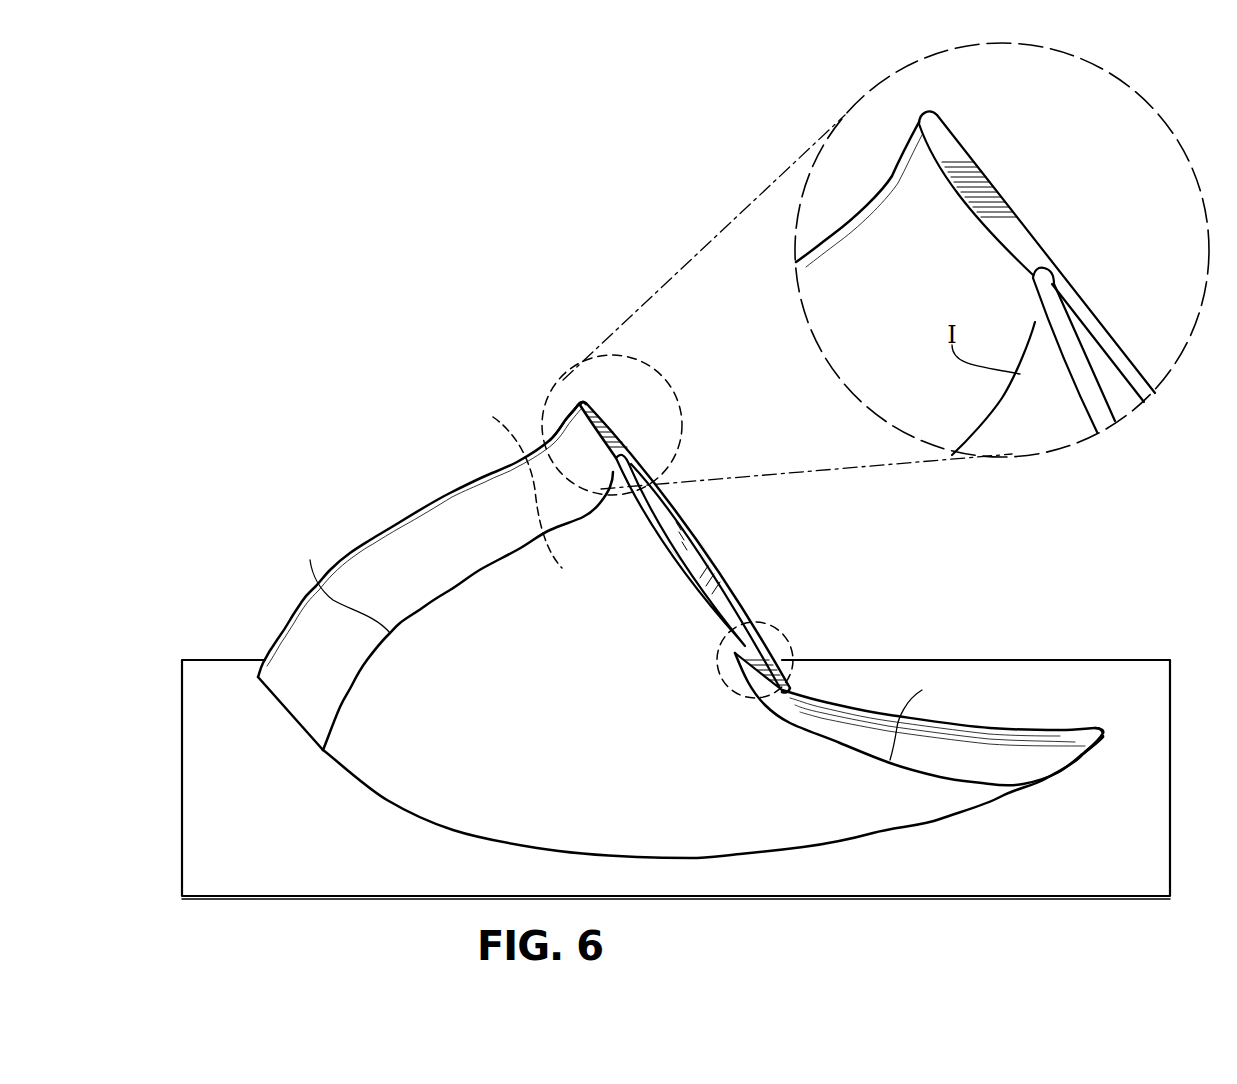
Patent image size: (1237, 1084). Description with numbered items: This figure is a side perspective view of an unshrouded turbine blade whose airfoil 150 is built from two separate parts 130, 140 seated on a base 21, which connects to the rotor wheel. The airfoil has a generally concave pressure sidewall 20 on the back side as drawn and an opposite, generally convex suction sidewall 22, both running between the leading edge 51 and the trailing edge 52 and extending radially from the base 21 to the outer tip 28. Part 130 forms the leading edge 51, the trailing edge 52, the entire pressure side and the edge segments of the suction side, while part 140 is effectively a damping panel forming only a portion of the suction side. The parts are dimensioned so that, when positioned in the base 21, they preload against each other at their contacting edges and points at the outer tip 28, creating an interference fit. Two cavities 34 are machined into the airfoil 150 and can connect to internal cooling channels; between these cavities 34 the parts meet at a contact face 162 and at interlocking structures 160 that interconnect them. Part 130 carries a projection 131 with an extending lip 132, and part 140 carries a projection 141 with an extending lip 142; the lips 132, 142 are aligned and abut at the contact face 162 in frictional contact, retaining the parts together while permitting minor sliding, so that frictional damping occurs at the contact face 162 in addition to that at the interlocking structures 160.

The pressure sidewall 20 is at (783, 818).
The base 21 is at (760, 877).
The suction sidewall 22 is at (515, 483).
The outer tip 28 is at (608, 418).
The cavities 34 is at (665, 507).
The leading edge 51 is at (557, 430).
The trailing edge 52 is at (1103, 732).
The part 130 is at (483, 477).
The projection 131 is at (702, 557).
The lip 132 is at (695, 553).
The part 140 is at (417, 742).
The projection 141 is at (688, 570).
The lip 142 is at (673, 553).
The airfoil 150 is at (452, 634).
The interlocking structures 160 is at (680, 410).
The contact face 162 is at (680, 557).